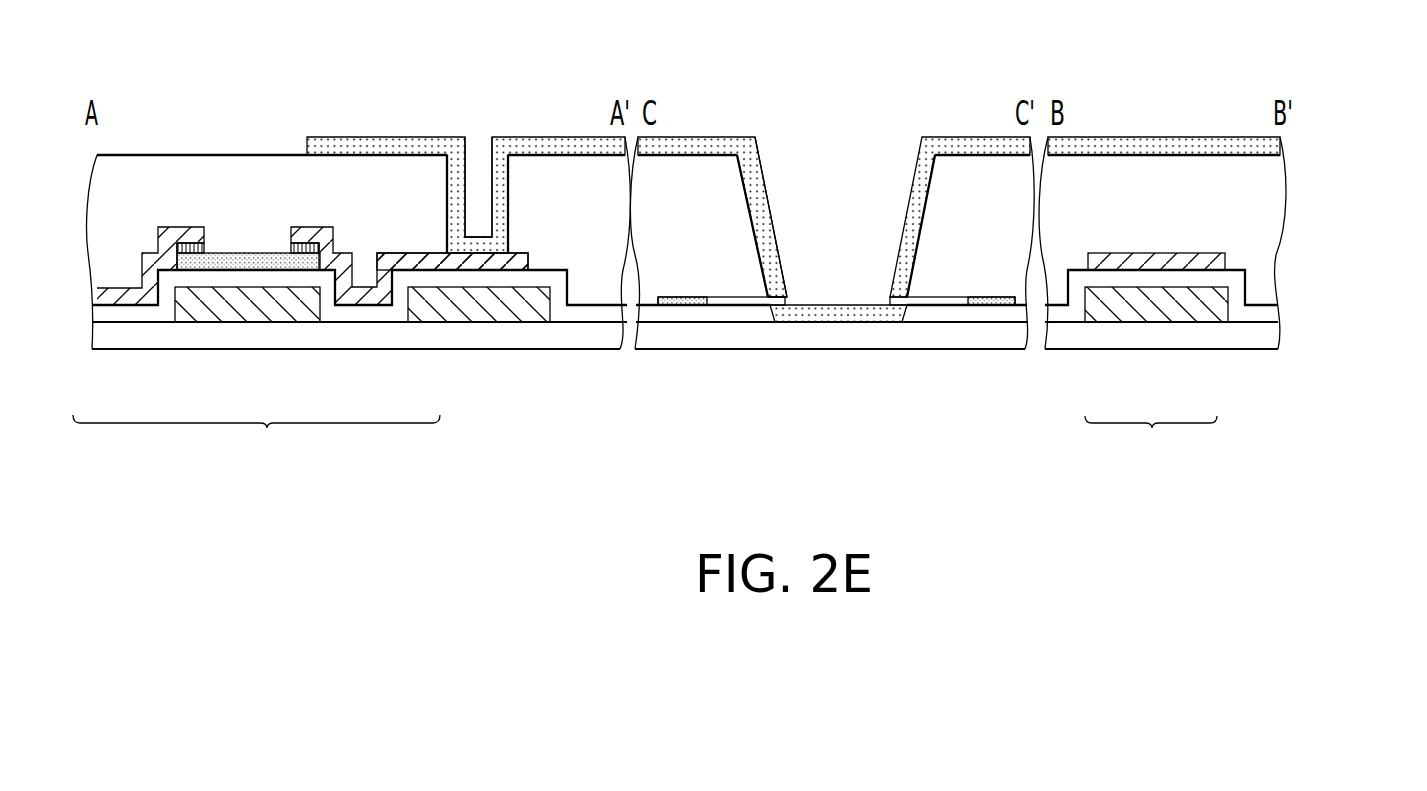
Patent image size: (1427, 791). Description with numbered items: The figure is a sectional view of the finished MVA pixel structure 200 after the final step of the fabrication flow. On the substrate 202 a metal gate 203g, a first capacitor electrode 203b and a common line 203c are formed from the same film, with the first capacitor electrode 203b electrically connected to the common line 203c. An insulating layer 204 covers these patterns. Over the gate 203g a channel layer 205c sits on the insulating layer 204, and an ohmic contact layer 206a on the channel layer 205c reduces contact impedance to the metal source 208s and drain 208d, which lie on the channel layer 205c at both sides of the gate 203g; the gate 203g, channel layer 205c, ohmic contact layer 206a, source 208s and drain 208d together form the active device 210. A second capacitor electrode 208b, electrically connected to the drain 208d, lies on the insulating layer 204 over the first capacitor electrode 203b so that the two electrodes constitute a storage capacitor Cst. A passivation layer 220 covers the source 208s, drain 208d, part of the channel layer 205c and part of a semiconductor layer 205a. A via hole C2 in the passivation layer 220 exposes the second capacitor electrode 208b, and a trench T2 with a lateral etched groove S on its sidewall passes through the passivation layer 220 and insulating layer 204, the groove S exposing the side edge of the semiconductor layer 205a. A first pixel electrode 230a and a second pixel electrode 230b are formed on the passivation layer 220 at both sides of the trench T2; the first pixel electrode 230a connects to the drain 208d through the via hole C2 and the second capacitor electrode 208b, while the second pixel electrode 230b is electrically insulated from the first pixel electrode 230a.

The MVA pixel structure 200 is at (1410, 423).
The substrate 202 is at (1263, 337).
The insulating layer 204 is at (1262, 313).
The gate 203g is at (297, 307).
The common line 203c is at (518, 302).
The first capacitor electrode 203b is at (1118, 307).
The channel layer 205c is at (243, 263).
The semiconductor layer 205a is at (678, 307).
The ohmic contact layer 206a is at (190, 248).
The source 208s is at (110, 293).
The drain 208d is at (368, 300).
The second capacitor electrode 208b is at (516, 262).
The active device 210 is at (256, 442).
The passivation layer 220 is at (1235, 213).
The first pixel electrode 230a is at (335, 150).
The second pixel electrode 230b is at (953, 143).
The via hole C2 is at (452, 181).
The trench T2 is at (751, 196).
The lateral etched groove S is at (785, 302).
The storage capacitor Cst is at (1151, 443).